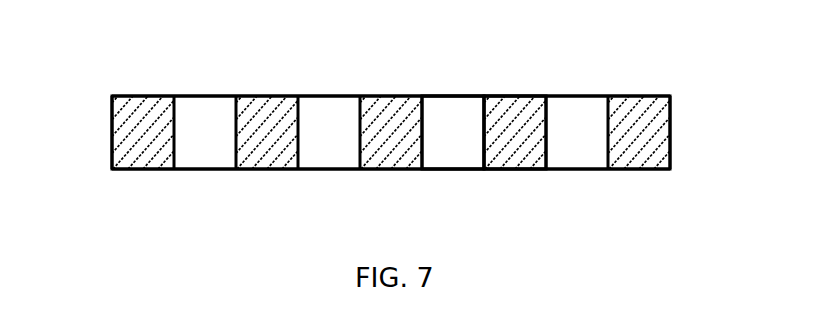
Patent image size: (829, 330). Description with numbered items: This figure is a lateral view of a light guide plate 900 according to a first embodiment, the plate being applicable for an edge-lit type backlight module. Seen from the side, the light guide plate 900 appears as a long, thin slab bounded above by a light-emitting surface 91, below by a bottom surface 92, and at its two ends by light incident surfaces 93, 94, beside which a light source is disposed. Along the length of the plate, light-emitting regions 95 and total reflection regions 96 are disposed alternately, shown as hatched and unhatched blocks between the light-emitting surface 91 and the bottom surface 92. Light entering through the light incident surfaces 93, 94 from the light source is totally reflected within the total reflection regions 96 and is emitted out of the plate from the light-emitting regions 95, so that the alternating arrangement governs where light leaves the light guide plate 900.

The light guide plate 900 is at (351, 88).
The light-emitting surface 91 is at (228, 96).
The bottom surface 92 is at (596, 170).
The light incident surface 93 is at (106, 127).
The light incident surface 94 is at (678, 123).
The light-emitting region 95 is at (518, 118).
The total reflection region 96 is at (455, 150).